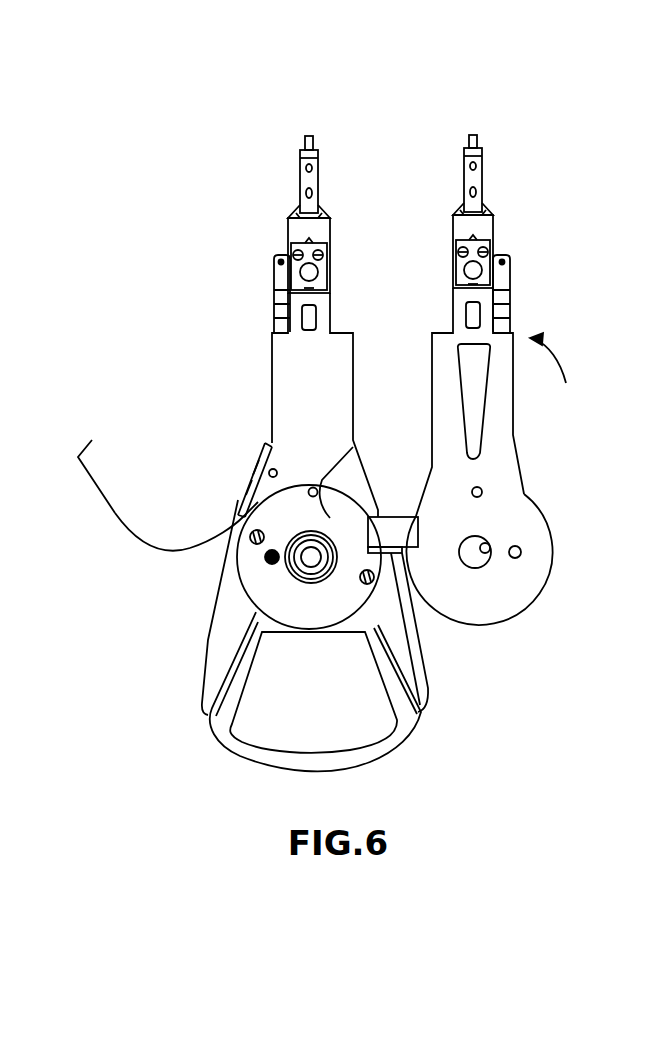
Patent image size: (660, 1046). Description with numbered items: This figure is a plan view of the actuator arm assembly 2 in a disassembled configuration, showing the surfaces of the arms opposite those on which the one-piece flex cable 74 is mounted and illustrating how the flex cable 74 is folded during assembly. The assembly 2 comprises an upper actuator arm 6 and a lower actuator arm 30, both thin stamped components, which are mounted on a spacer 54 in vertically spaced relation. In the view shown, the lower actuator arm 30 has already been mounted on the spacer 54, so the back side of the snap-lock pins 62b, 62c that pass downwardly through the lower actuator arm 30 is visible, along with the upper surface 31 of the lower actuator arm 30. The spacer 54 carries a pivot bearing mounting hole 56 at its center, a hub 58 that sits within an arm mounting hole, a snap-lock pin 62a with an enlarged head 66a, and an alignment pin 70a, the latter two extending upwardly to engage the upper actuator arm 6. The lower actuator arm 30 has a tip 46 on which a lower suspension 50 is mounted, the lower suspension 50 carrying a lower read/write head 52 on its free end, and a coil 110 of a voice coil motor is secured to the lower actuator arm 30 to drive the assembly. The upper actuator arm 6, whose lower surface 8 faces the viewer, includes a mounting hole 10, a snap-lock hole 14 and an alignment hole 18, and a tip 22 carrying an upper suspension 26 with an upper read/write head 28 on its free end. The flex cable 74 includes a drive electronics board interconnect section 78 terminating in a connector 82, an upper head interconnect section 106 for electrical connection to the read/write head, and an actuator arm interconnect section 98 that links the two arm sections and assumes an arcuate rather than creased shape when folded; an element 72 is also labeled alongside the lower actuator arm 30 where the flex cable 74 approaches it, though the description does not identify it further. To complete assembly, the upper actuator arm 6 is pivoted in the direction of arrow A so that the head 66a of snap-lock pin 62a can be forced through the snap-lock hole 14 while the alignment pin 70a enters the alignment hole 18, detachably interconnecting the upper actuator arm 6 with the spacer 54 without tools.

The actuator arm assembly 2 is at (504, 380).
The arrow A is at (566, 383).
The upper actuator arm 6 is at (483, 485).
The lower surface of upper actuator arm 8 is at (506, 513).
The mounting hole 10 is at (490, 548).
The snap-lock hole 14 is at (522, 552).
The alignment hole 18 is at (510, 460).
The tip of upper actuator arm 22 is at (453, 263).
The upper suspension 26 is at (490, 207).
The upper read/write head 28 is at (470, 142).
The lower actuator arm 30 is at (315, 510).
The upper surface of lower actuator arm 31 is at (296, 389).
The tip of lower actuator arm 46 is at (328, 273).
The lower suspension 50 is at (320, 207).
The lower read/write head 52 is at (318, 158).
The spacer 54 is at (287, 560).
The pivot bearing mounting hole 56 is at (312, 560).
The hub 58 is at (330, 525).
The snap-lock pin 62a is at (268, 560).
The snap-lock pin 62b is at (369, 582).
The snap-lock pin 62c is at (256, 541).
The head of snap-lock pin 66a is at (272, 550).
The alignment pin 70a is at (353, 447).
The strap 72 is at (262, 447).
The flex cable 74 is at (93, 482).
The drive electronics board interconnect section 78 is at (113, 513).
The connector 82 is at (92, 440).
The actuator arm interconnect section 98 is at (390, 527).
The upper head interconnect section 106 is at (276, 268).
The coil 110 is at (237, 760).